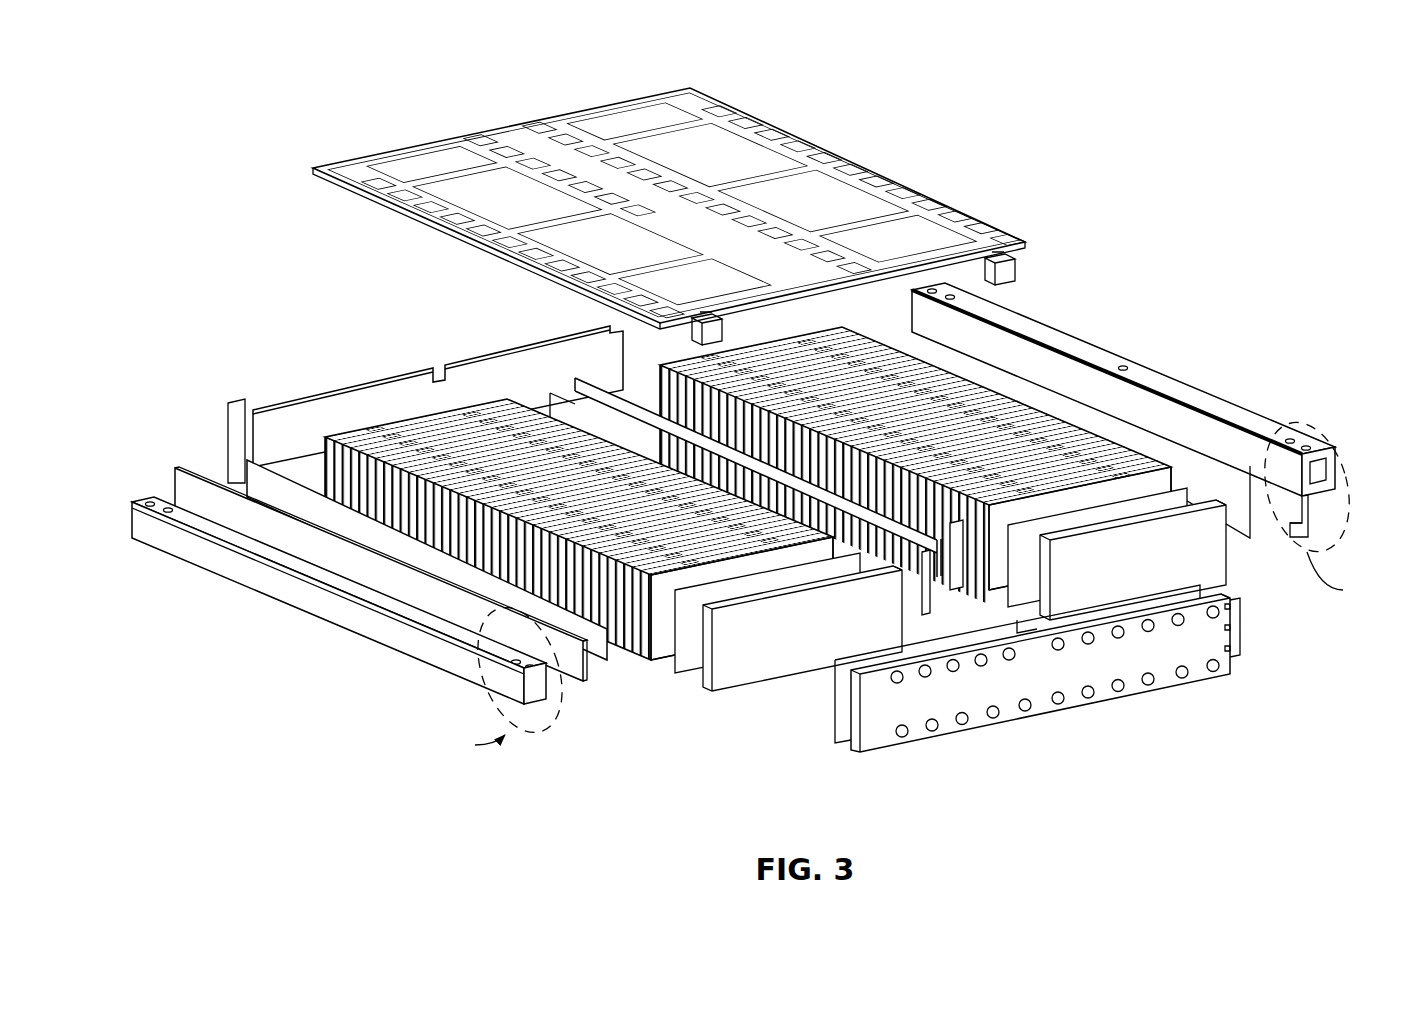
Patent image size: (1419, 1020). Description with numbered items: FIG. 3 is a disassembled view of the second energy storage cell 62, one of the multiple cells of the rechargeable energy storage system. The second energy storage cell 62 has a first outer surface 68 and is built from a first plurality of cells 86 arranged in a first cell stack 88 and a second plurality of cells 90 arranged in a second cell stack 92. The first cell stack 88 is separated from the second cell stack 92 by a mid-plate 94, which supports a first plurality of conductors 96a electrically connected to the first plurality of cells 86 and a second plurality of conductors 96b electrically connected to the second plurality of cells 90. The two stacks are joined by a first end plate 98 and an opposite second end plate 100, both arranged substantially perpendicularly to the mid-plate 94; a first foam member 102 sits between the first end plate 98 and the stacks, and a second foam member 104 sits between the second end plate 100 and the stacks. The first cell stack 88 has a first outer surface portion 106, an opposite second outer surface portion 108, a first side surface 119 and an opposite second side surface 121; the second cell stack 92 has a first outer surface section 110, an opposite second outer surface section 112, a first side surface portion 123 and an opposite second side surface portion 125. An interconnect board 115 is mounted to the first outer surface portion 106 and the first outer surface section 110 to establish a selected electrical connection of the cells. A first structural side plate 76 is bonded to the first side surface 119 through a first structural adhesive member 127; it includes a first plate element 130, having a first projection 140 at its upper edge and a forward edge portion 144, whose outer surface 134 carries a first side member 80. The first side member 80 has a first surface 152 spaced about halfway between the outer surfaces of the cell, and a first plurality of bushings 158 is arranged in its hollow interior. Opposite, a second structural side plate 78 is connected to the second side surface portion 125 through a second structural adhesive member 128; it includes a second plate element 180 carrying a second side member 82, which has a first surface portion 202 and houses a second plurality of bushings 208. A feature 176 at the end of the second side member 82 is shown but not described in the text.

The second energy storage cell 62 is at (731, 535).
The first outer surface 68 is at (670, 125).
The interconnect board 115 is at (669, 188).
The second cell stack 92 is at (850, 340).
The second side member 82 is at (1164, 424).
The first outer surface section 110 is at (940, 375).
The second side surface portion 125 is at (1013, 400).
The first surface portion 202 is at (1135, 375).
The second structural adhesive member 128 is at (1131, 431).
The bushing 208 is at (1359, 437).
The recess 176 is at (1330, 470).
The second structural side plate 78 is at (1330, 500).
The second plate element 180 is at (1312, 517).
The second plurality of cells 90 is at (672, 355).
The second end plate 100 is at (394, 386).
The second foam member 104 is at (273, 457).
The first side surface portion 123 is at (562, 345).
The first plurality of cells 86 is at (228, 405).
The first cell stack 88 is at (566, 526).
The first outer surface portion 106 is at (488, 435).
The first structural adhesive member 127 is at (428, 512).
The first plate element 130 is at (475, 571).
The second outer surface portion 108 is at (633, 655).
The first plurality of conductors 96a is at (779, 660).
The second side surface 121 is at (703, 650).
The first structural side plate 76 is at (348, 630).
The first side surface 119 is at (378, 577).
The first projection 140 is at (240, 490).
The forward edge portion 144 is at (580, 690).
The first side member 80 is at (308, 631).
The first surface 152 is at (296, 583).
The outer surface 134 is at (243, 518).
The bushing 158 is at (540, 700).
The mid-plate 94 is at (908, 560).
The second plurality of conductors 96b is at (947, 563).
The first foam member 102 is at (974, 675).
The second outer surface section 112 is at (987, 585).
The first end plate 98 is at (1130, 667).